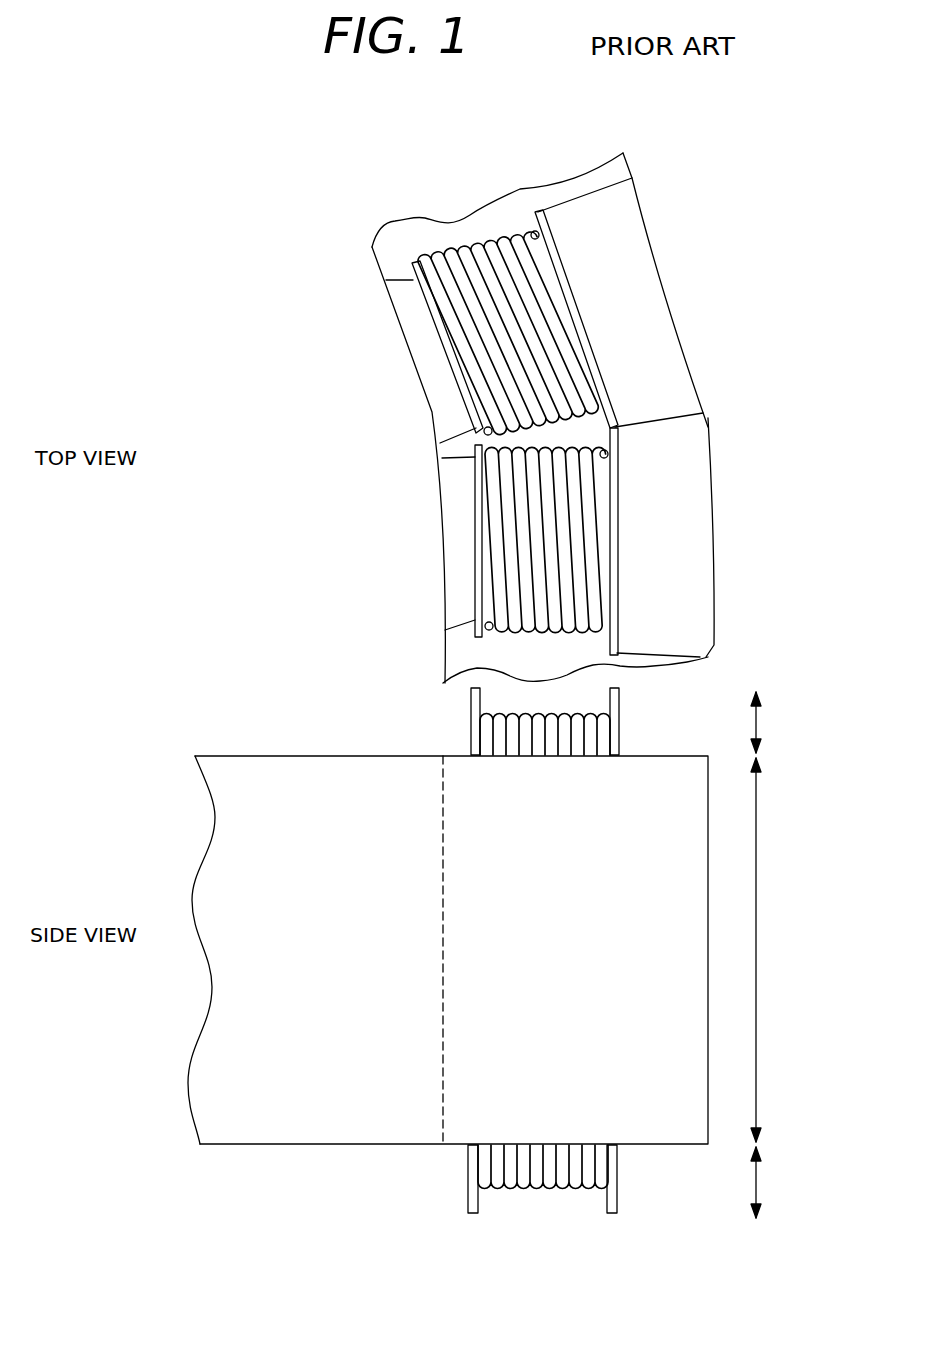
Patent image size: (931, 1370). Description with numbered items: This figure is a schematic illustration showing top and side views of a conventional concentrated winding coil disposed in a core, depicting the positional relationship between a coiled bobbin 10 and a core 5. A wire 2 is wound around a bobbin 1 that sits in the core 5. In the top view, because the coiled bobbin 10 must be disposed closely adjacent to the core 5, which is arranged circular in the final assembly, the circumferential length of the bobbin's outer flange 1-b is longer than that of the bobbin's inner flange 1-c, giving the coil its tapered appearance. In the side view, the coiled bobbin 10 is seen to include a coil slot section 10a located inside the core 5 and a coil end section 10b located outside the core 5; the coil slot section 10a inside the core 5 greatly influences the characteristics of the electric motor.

The bobbin 1 is at (482, 274).
The outer flange 1-b is at (536, 212).
The inner flange 1-c is at (413, 260).
The wire 2 is at (556, 324).
The core 5 is at (455, 567).
The coiled bobbin 10 is at (433, 623).
The coil slot section 10a is at (777, 950).
The coil end section 10b is at (777, 955).